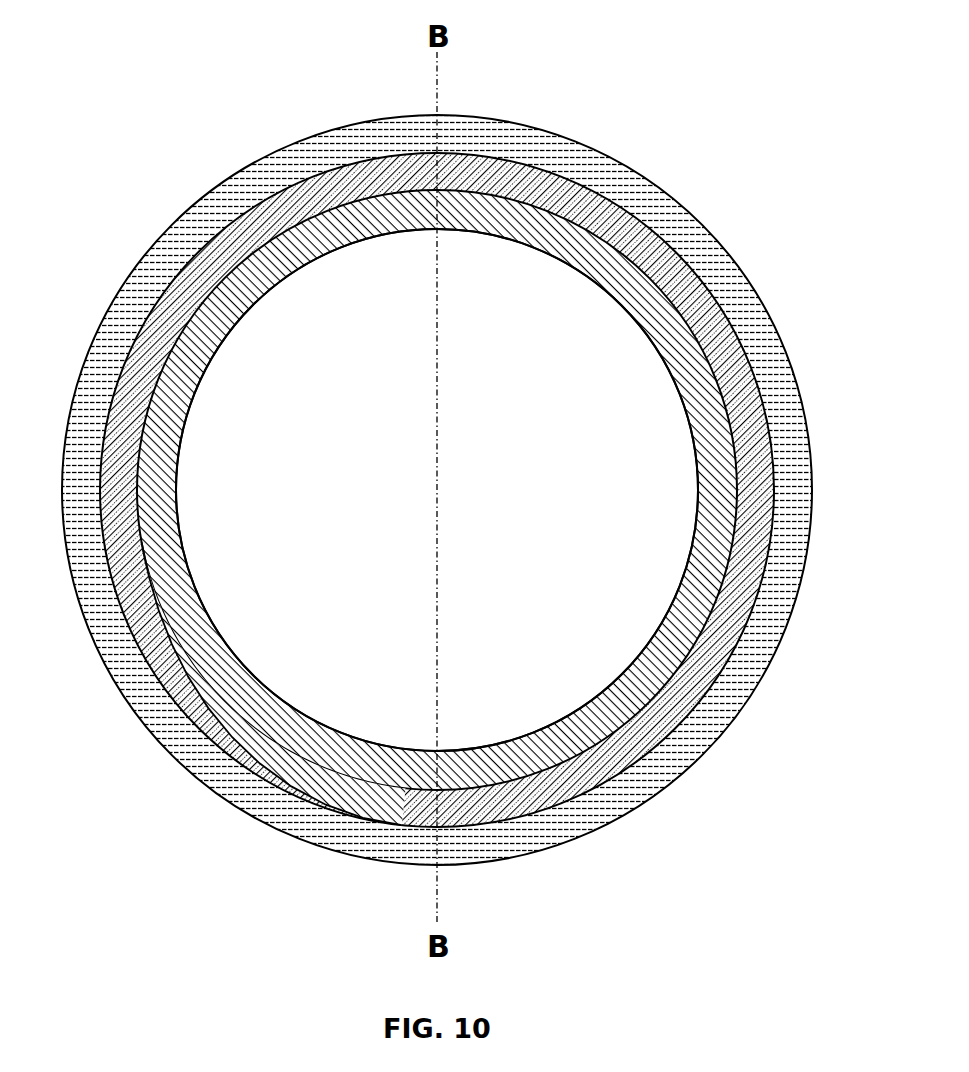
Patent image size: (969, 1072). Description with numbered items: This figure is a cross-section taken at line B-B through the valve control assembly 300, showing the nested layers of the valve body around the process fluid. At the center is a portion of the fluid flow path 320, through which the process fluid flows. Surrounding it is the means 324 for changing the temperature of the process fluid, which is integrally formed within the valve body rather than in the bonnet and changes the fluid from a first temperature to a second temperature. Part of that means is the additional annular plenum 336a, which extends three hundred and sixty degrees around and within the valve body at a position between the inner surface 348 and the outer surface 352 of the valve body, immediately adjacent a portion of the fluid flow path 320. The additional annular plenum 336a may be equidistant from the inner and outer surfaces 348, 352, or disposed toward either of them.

The valve control assembly 300 is at (147, 60).
The fluid flow path 320 is at (351, 432).
The means for changing the temperature of the process fluid 324 is at (243, 790).
The additional annular plenum 336a is at (652, 727).
The inner surface of the valve body 348 is at (813, 473).
The outer surface of the valve body 352 is at (700, 473).